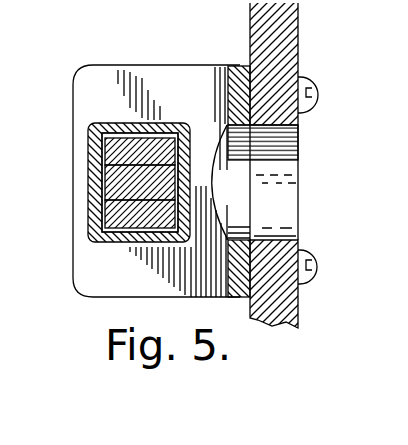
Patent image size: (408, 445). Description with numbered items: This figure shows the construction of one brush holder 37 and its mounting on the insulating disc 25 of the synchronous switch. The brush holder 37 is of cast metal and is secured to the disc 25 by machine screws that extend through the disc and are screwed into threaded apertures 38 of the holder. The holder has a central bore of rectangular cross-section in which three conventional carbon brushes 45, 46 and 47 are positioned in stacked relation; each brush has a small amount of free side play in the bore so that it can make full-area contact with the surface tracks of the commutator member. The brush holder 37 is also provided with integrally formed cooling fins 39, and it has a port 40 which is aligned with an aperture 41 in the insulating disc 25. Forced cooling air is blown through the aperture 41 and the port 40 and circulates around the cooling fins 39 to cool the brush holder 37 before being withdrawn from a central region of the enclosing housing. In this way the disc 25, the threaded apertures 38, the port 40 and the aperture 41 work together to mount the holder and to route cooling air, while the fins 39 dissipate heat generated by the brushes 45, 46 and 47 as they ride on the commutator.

The disc 25 is at (285, 49).
The brush holder 37 is at (88, 226).
The threaded aperture 38 is at (226, 82).
The cooling fin 39 is at (152, 74).
The port 40 is at (240, 222).
The aperture 41 is at (278, 121).
The carbon brush 45 is at (112, 154).
The carbon brush 46 is at (112, 183).
The carbon brush 47 is at (110, 213).